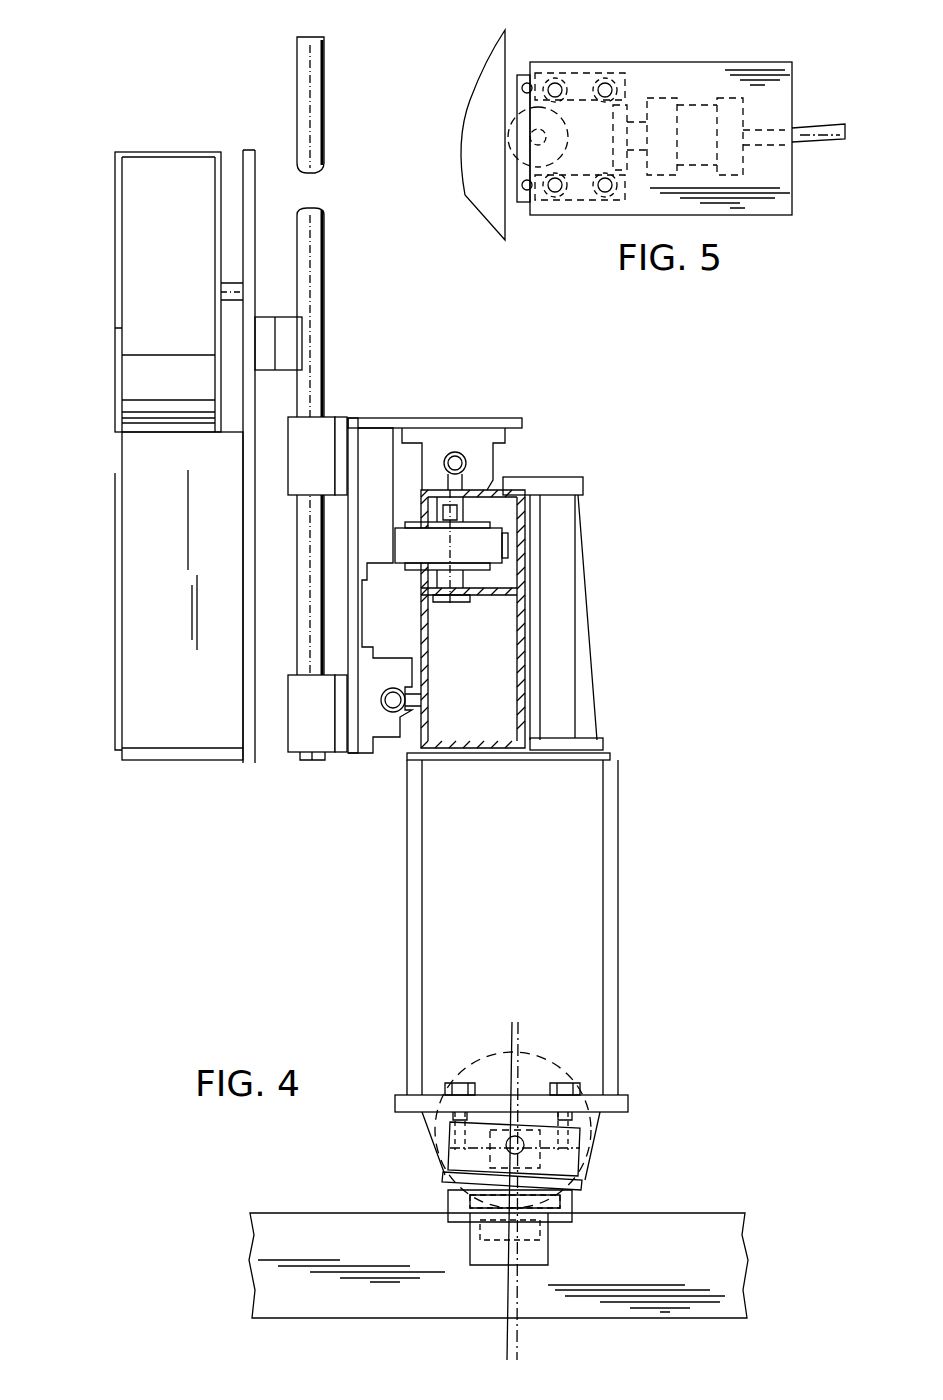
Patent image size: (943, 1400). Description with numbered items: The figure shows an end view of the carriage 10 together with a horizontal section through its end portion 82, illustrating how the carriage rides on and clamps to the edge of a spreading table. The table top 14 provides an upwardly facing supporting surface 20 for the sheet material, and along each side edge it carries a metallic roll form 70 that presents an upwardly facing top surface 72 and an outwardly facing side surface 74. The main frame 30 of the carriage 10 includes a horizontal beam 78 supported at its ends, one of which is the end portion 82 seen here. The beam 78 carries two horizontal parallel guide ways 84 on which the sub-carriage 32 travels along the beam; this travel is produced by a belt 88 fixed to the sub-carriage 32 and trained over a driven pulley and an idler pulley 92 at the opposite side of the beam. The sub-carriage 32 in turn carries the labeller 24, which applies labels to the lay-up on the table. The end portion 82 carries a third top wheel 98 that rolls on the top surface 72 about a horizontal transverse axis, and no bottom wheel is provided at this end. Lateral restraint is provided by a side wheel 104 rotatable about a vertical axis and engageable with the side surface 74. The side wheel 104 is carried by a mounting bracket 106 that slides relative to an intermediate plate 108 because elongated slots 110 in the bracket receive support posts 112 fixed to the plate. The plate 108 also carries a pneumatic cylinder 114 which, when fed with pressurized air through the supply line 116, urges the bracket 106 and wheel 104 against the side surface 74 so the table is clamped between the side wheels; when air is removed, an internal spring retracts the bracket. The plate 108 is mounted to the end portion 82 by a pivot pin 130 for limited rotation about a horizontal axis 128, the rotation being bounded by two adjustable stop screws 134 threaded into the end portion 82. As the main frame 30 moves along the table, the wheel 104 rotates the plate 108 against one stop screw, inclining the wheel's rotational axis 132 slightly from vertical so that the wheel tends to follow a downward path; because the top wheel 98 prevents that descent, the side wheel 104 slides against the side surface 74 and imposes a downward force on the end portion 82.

In FIG. 4, the carriage 10 is at (595, 550).
In FIG. 4, the table top 14 is at (322, 1220).
In FIG. 5, the table top 14 is at (487, 65).
In FIG. 4, the supporting surface 20 is at (665, 1213).
In FIG. 5, the supporting surface 20 is at (472, 110).
In FIG. 4, the labeller 24 is at (85, 362).
In FIG. 4, the main frame 30 is at (583, 715).
In FIG. 4, the sub-carriage 32 is at (352, 428).
In FIG. 4, the roll form 70 is at (367, 1220).
In FIG. 4, the top surface 72 is at (275, 1213).
In FIG. 4, the side surface 74 is at (690, 1225).
In FIG. 5, the side surface 74 is at (507, 165).
In FIG. 4, the horizontal beam 78 is at (527, 668).
In FIG. 4, the end portion 82 is at (612, 872).
In FIG. 4, the guide ways 84 is at (458, 463).
In FIG. 4, the belt 88 is at (412, 532).
In FIG. 4, the idler pulley 92 is at (466, 522).
In FIG. 4, the third top wheel 98 is at (586, 1152).
In FIG. 4, the side wheel 104 is at (470, 1245).
In FIG. 5, the side wheel 104 is at (508, 137).
In FIG. 4, the mounting bracket 106 is at (448, 1200).
In FIG. 5, the mounting bracket 106 is at (522, 75).
In FIG. 4, the intermediate plate 108 is at (577, 1188).
In FIG. 5, the intermediate plate 108 is at (630, 62).
In FIG. 5, the elongated slots 110 is at (528, 83).
In FIG. 5, the support posts 112 is at (604, 83).
In FIG. 4, the pneumatic cylinder 114 is at (548, 1248).
In FIG. 5, the pneumatic cylinder 114 is at (690, 98).
In FIG. 5, the supply line 116 is at (815, 126).
In FIG. 4, the horizontal axis 128 is at (450, 1140).
In FIG. 4, the pivot pin 130 is at (508, 1150).
In FIG. 4, the rotational axis 132 is at (508, 1345).
In FIG. 4, the adjustable stop screws 134 is at (460, 1083).